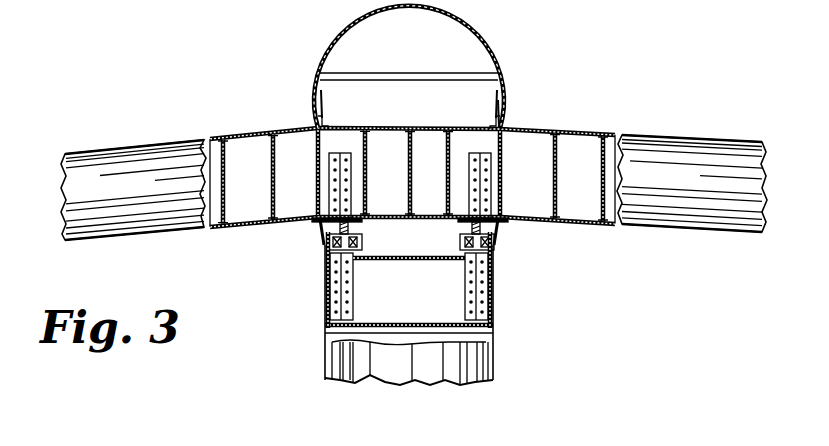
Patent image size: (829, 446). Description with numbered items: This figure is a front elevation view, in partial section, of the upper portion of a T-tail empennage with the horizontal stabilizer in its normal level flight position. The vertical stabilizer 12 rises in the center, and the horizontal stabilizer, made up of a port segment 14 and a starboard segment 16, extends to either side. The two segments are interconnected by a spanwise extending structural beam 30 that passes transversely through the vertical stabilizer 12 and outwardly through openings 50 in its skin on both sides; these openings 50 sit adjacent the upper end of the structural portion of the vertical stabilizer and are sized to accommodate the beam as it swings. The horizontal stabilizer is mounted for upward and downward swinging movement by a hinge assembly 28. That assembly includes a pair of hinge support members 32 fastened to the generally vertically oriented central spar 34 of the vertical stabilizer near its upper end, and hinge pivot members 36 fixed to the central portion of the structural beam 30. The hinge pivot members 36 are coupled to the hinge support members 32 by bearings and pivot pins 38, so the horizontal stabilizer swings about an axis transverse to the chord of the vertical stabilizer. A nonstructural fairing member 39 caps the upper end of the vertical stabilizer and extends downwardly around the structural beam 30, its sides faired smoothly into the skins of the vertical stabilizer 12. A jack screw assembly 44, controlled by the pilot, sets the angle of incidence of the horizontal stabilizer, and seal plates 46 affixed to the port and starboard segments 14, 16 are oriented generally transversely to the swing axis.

The vertical stabilizer 12 is at (500, 352).
The port segment 14 is at (620, 133).
The starboard segment 16 is at (230, 135).
The hinge assembly 28 is at (446, 273).
The structural beam 30 is at (453, 128).
The hinge support members 32 is at (338, 283).
The central spar 34 is at (493, 310).
The hinge pivot members 36 is at (318, 228).
The pivot pins 38 is at (322, 246).
The fairing member 39 is at (466, 19).
The jack screw assembly 44 is at (325, 80).
The seal plates 46 is at (498, 112).
The openings 50 is at (325, 95).